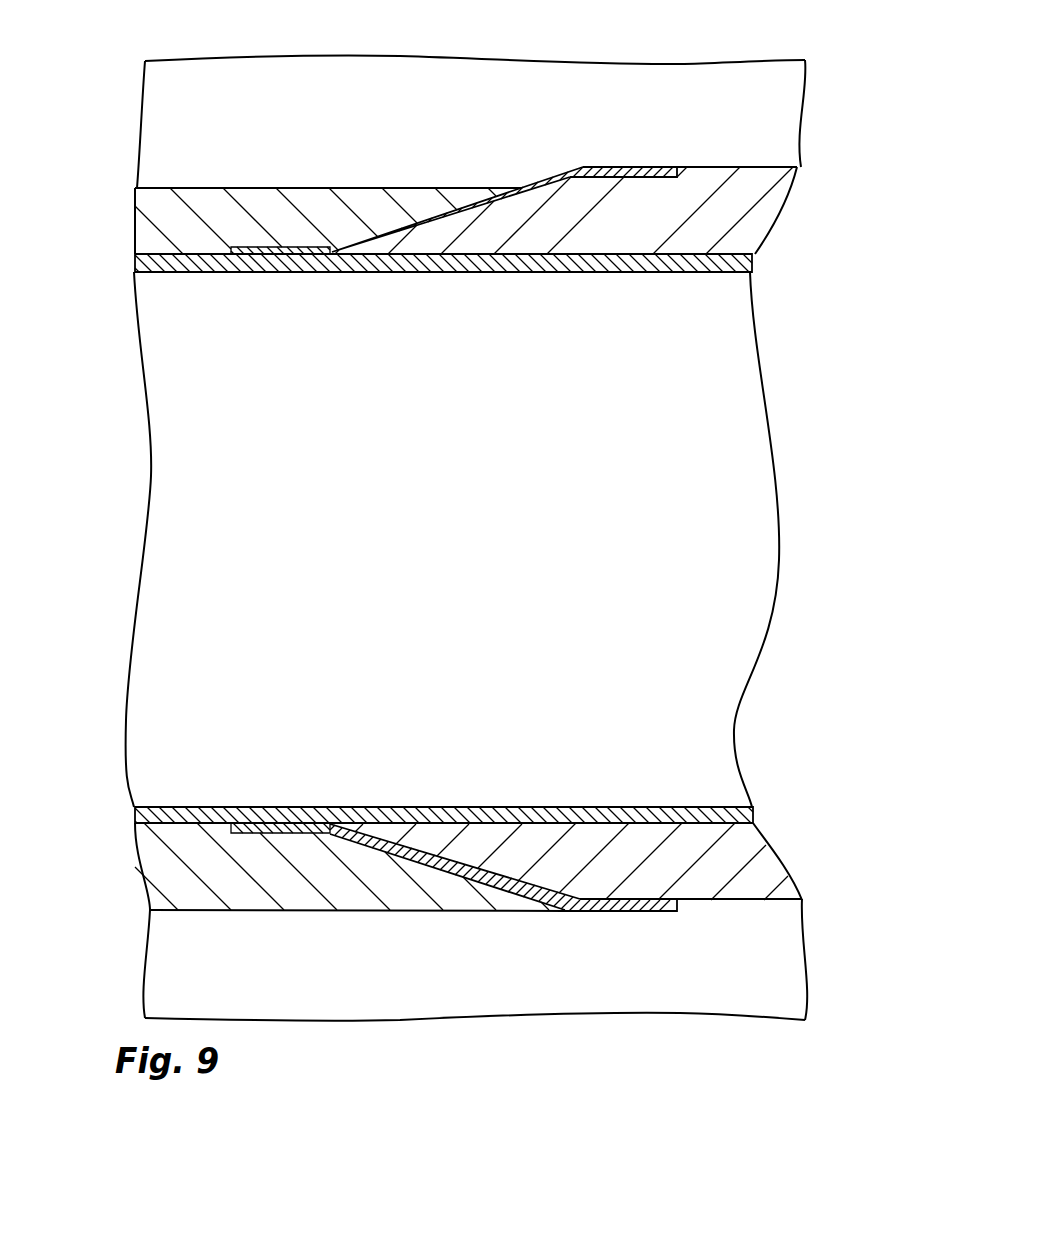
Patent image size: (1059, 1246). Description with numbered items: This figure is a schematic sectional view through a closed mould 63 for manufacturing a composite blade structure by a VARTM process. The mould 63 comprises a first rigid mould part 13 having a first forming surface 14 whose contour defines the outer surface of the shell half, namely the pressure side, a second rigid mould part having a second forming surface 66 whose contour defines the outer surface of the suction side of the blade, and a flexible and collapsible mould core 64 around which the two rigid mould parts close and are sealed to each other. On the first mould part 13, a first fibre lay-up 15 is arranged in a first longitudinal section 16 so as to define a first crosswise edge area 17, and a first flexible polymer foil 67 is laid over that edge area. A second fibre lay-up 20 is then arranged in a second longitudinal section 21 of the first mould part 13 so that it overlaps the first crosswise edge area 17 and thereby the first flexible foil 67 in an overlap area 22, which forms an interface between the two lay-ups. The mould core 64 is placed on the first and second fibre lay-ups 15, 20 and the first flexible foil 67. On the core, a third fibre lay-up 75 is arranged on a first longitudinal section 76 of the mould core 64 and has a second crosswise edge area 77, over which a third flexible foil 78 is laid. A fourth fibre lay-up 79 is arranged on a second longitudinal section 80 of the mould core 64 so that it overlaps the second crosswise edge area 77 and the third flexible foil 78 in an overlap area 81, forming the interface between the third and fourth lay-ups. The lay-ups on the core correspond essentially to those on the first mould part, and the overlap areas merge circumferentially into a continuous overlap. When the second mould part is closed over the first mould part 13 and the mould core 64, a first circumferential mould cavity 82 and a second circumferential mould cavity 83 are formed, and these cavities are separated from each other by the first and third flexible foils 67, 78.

The mould 63 is at (118, 118).
The overlap area 81 is at (420, 207).
The third flexible foil 78 is at (628, 160).
The second forming surface 66 is at (757, 158).
The second circumferential mould cavity 83 is at (793, 187).
The third fibre lay-up 75 is at (752, 220).
The first longitudinal section 76 is at (703, 253).
The first circumferential mould cavity 82 is at (137, 205).
The fourth fibre lay-up 79 is at (153, 237).
The second longitudinal section 80 is at (205, 253).
The second crosswise edge area 77 is at (532, 220).
The mould core 64 is at (752, 278).
The second fibre lay-up 20 is at (750, 880).
The first fibre lay-up 15 is at (160, 873).
The first longitudinal section 16 is at (272, 920).
The first crosswise edge area 17 is at (397, 903).
The overlap area 22 is at (455, 883).
The first rigid mould part 13 is at (671, 985).
The first flexible polymer foil 67 is at (620, 920).
The first forming surface 14 is at (722, 900).
The second longitudinal section 21 is at (752, 900).